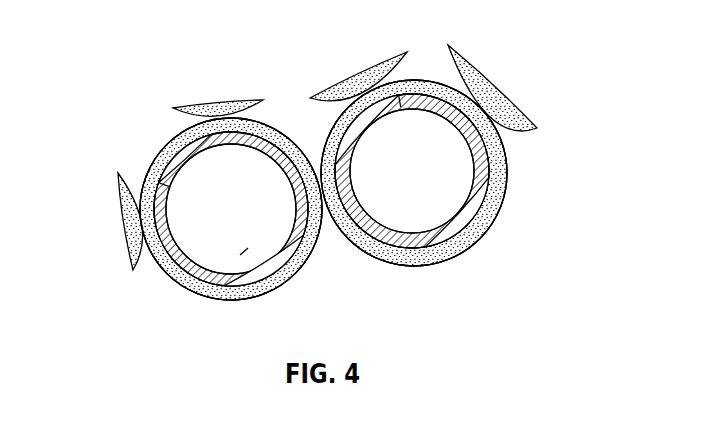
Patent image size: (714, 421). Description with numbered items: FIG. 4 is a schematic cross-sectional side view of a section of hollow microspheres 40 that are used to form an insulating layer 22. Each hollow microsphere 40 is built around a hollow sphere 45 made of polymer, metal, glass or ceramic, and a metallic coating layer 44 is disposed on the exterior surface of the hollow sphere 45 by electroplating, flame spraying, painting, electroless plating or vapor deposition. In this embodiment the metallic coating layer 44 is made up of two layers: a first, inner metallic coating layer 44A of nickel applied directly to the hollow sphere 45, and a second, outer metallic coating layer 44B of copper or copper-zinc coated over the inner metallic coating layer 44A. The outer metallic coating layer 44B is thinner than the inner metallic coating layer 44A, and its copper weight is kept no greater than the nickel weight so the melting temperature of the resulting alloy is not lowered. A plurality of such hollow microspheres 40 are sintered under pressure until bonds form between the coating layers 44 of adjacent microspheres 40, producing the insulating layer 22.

The insulating layer 22 is at (287, 95).
The hollow microsphere 40 is at (197, 108).
The metallic coating layer 44 is at (183, 283).
The inner metallic coating layer 44A is at (158, 184).
The outer metallic coating layer 44B is at (276, 287).
The hollow sphere 45 is at (240, 255).